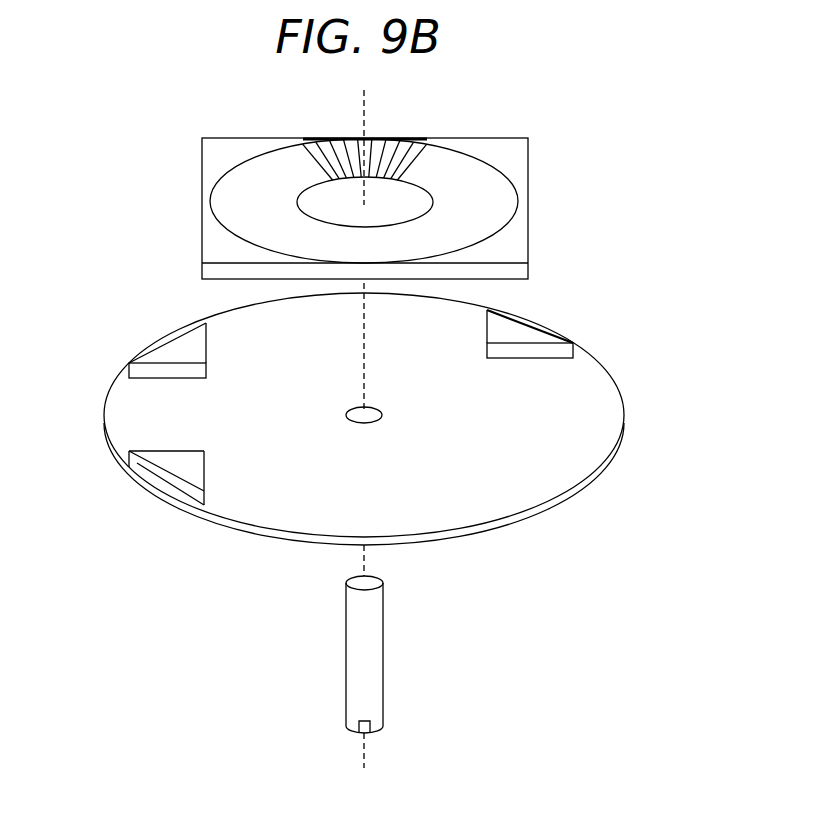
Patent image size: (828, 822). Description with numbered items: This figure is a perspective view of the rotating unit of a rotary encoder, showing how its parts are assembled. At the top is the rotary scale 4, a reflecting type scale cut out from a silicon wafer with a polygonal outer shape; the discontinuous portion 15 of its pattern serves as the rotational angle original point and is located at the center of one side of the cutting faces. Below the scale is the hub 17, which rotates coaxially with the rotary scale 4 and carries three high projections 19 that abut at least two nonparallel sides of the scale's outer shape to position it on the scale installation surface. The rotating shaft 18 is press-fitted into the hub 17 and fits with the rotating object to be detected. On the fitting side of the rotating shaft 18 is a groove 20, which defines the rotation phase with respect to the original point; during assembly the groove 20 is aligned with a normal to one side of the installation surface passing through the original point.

The rotary scale 4 is at (213, 165).
The discontinuous portion 15 is at (370, 137).
The hub 17 is at (605, 401).
The rotating shaft 18 is at (346, 622).
The projections 19 is at (186, 340).
The groove 20 is at (372, 735).